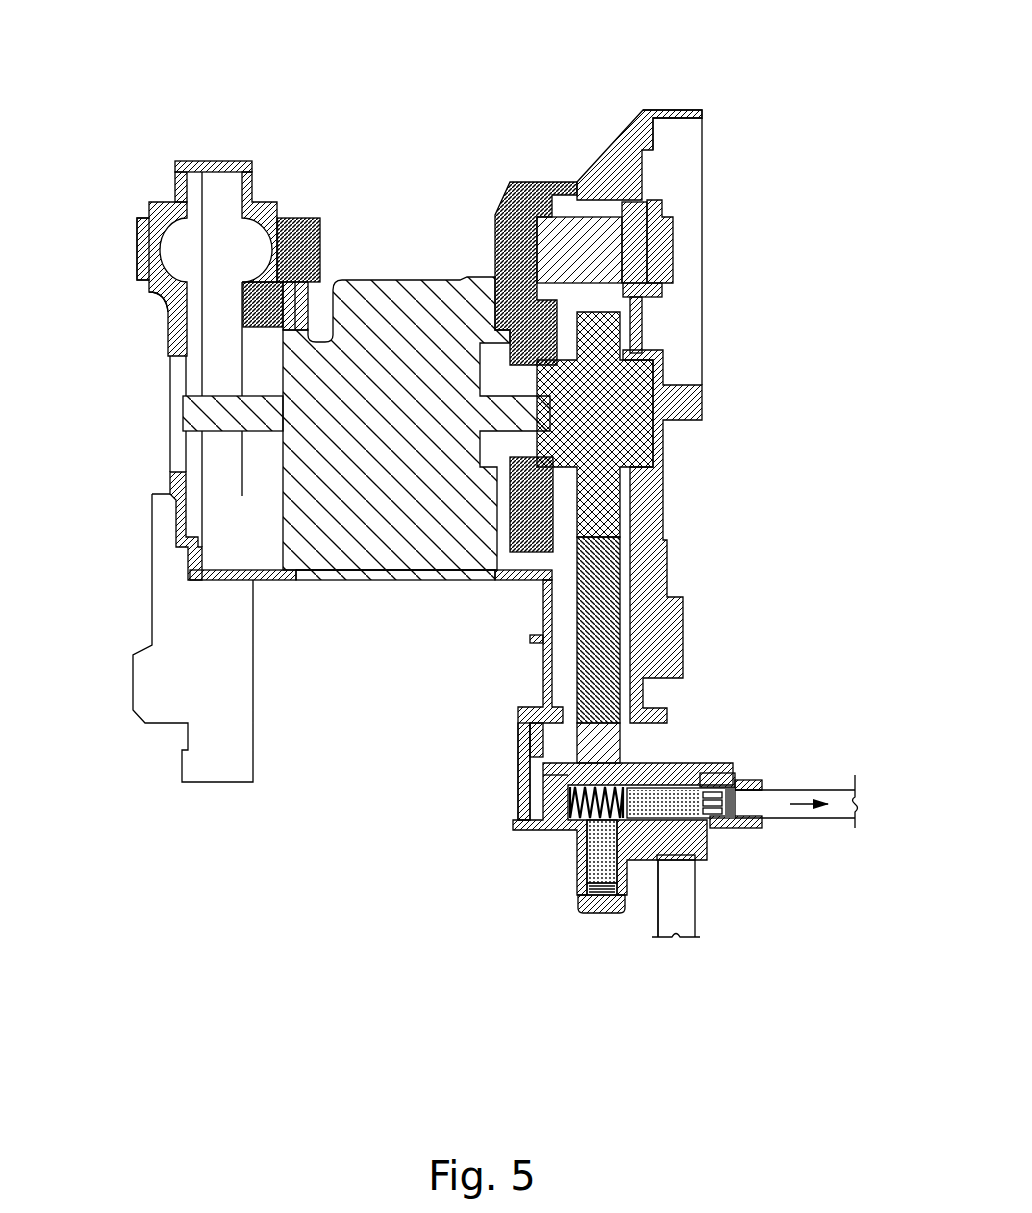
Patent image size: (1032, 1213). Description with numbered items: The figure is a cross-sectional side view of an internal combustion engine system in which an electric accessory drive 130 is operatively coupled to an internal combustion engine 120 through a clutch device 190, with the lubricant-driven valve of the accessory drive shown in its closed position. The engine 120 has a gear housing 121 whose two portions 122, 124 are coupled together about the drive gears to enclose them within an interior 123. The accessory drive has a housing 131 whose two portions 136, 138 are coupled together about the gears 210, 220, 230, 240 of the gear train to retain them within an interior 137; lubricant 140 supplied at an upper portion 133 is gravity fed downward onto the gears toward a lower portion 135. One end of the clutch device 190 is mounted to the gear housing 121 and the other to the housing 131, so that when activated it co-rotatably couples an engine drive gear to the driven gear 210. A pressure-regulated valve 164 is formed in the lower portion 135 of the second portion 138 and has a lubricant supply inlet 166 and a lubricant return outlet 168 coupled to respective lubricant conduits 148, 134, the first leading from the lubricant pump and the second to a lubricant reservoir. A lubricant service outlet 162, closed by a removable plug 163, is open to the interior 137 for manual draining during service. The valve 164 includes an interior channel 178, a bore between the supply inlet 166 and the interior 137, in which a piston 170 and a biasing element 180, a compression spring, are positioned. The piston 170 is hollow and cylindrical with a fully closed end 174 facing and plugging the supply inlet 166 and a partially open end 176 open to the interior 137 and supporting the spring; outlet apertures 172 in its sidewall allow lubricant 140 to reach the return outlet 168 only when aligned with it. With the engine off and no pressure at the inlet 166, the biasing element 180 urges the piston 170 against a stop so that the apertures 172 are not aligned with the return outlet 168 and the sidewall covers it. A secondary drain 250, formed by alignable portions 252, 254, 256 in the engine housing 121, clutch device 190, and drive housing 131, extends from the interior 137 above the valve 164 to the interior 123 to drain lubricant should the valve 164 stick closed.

The internal combustion engine 120 is at (213, 158).
The gear housing 121 is at (148, 300).
The first portion of gear housing 122 is at (136, 248).
The interior of gear housing 123 is at (212, 500).
The second portion of gear housing 124 is at (298, 217).
The electric accessory drive 130 is at (565, 180).
The housing of electric accessory drive 131 is at (494, 200).
The upper portion of housing 133 is at (642, 263).
The lubricant conduit 134 is at (695, 940).
The lower portion of housing 135 is at (540, 835).
The first portion of drive housing 136 is at (530, 690).
The interior of drive housing 137 is at (628, 585).
The second portion of drive housing 138 is at (652, 135).
The lubricant 140 is at (578, 870).
The lubricant conduit 148 is at (858, 790).
The lubricant service outlet 162 is at (593, 865).
The removable cap or plug 163 is at (605, 915).
The pressure-regulated valve 164 is at (745, 770).
The lubricant supply inlet 166 is at (802, 778).
The lubricant return outlet 168 is at (697, 862).
The piston 170 is at (742, 823).
The outlet apertures 172 is at (692, 862).
The fully closed end 174 is at (768, 778).
The partially open end 176 is at (568, 775).
The interior channel 178 is at (716, 768).
The biasing element 180 is at (568, 802).
The clutch device 190 is at (358, 278).
The gear 210 is at (652, 237).
The gear 220 is at (652, 382).
The gear 230 is at (608, 663).
The gear 240 is at (615, 742).
The secondary drain 250 is at (350, 575).
The portion of secondary drain 252 is at (272, 575).
The portion of secondary drain 254 is at (412, 575).
The portion of secondary drain 256 is at (520, 575).